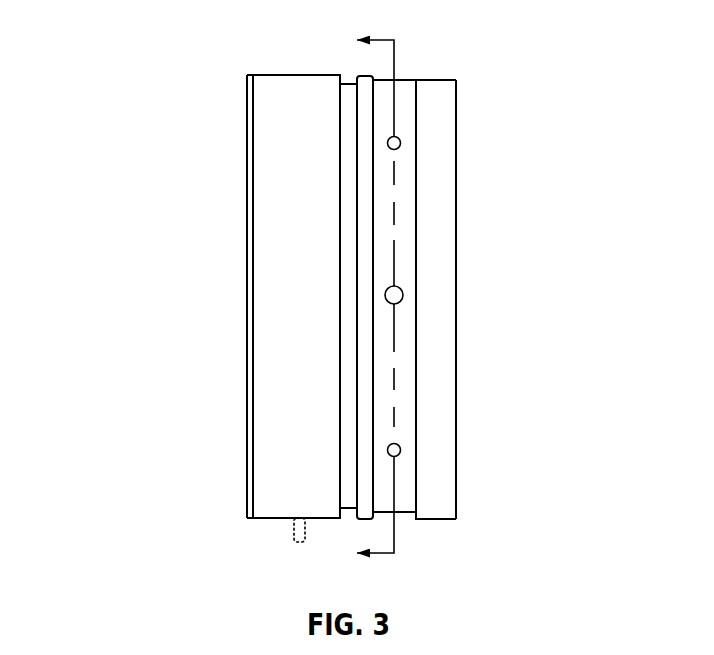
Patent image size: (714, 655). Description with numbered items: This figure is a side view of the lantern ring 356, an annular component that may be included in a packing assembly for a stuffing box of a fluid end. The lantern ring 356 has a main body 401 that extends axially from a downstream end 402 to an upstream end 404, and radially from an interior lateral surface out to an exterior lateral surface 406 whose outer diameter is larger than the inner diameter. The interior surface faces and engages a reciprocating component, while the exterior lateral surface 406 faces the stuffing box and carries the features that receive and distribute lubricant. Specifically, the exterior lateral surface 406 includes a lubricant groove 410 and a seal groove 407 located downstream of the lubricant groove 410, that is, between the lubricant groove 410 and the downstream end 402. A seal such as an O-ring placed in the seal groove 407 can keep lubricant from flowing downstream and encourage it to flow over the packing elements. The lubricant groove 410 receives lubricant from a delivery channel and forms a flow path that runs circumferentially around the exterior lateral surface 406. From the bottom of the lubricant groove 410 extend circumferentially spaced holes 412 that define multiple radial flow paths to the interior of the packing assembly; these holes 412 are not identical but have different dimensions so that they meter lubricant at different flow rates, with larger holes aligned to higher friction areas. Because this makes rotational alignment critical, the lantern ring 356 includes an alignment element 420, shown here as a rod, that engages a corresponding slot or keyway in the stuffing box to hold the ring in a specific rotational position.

The lantern ring 356 is at (155, 98).
The main body 401 is at (293, 218).
The downstream end 402 is at (237, 290).
The upstream end 404 is at (462, 395).
The exterior lateral surface 406 is at (292, 125).
The seal groove 407 is at (347, 115).
The lubricant groove 410 is at (408, 100).
The circumferentially spaced holes 412 is at (403, 293).
The alignment element 420 is at (293, 538).